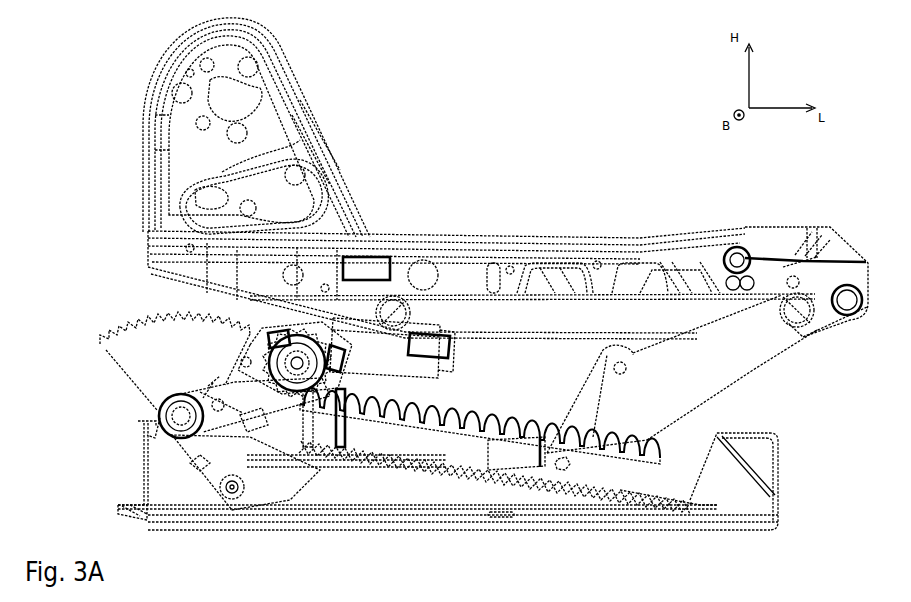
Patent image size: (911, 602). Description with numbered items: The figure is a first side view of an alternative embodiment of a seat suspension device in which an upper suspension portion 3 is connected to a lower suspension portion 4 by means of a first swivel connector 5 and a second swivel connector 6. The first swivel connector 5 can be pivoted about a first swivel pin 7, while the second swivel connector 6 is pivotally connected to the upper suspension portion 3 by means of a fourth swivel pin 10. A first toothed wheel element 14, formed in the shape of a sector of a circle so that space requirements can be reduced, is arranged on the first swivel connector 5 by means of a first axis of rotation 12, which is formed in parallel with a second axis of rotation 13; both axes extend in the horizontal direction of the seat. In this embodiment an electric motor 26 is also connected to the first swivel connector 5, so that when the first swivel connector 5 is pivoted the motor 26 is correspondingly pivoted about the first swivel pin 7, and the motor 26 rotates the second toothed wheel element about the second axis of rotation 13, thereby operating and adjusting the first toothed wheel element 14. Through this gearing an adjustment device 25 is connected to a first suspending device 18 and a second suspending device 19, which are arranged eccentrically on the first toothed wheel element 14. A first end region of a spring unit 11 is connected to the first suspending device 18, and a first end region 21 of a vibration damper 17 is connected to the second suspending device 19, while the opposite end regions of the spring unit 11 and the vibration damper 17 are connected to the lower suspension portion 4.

The upper suspension portion 3 is at (652, 255).
The lower suspension portion 4 is at (778, 458).
The first swivel connector 5 is at (380, 292).
The second swivel connector 6 is at (755, 358).
The first swivel pin 7 is at (235, 487).
The fourth swivel pin 10 is at (789, 318).
The spring unit 11 is at (427, 460).
The first axis of rotation 12 is at (178, 417).
The second axis of rotation 13 is at (297, 360).
The first toothed wheel element 14 is at (137, 363).
The vibration damper 17 is at (472, 460).
The first suspending device 18 is at (247, 423).
The second suspending device 19 is at (207, 398).
The first end region of the vibration damper 21 is at (317, 423).
The adjustment device 25 is at (104, 278).
The electric motor 26 is at (413, 347).